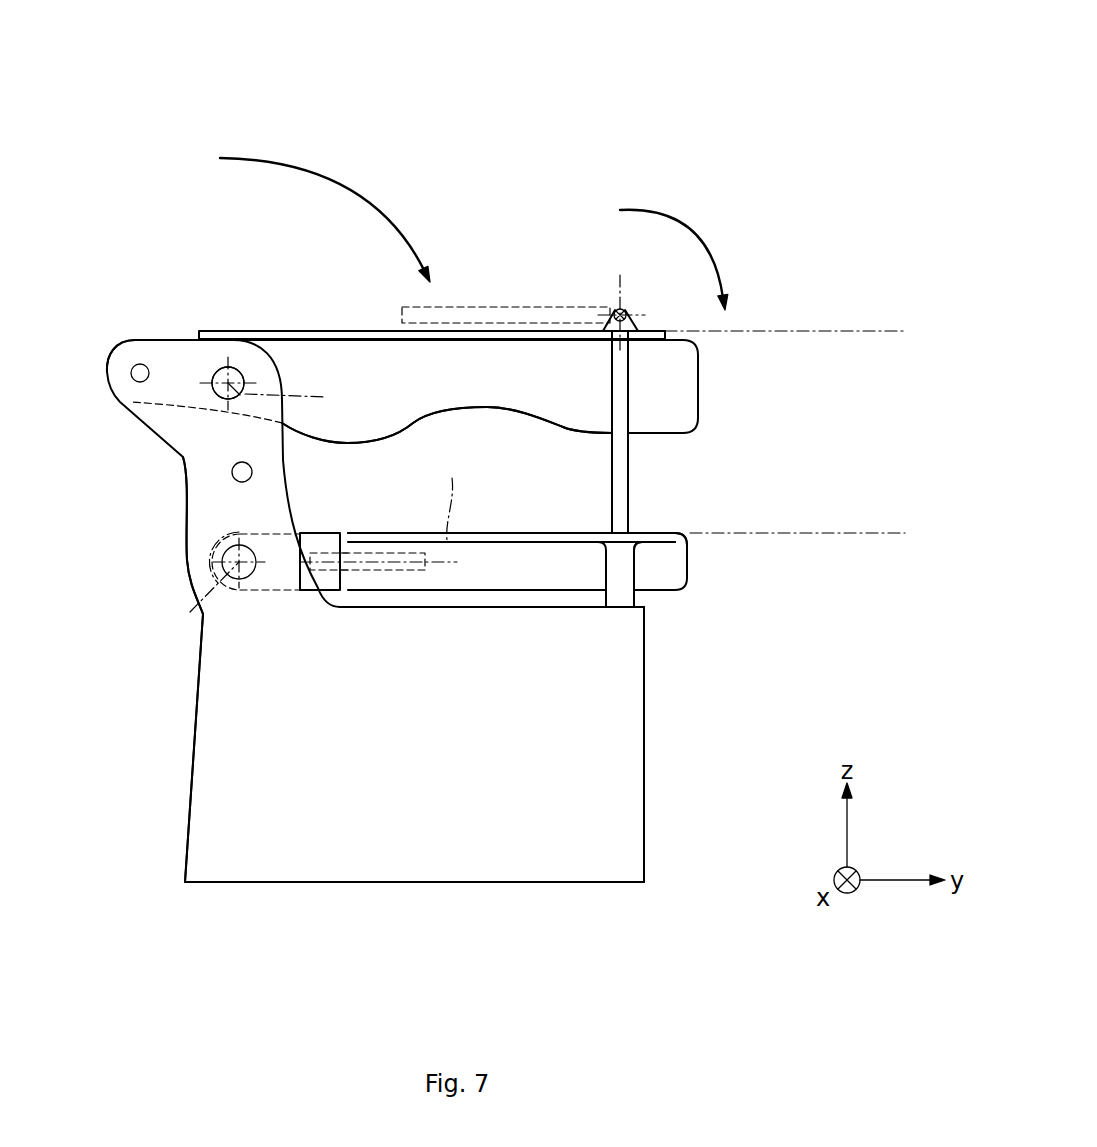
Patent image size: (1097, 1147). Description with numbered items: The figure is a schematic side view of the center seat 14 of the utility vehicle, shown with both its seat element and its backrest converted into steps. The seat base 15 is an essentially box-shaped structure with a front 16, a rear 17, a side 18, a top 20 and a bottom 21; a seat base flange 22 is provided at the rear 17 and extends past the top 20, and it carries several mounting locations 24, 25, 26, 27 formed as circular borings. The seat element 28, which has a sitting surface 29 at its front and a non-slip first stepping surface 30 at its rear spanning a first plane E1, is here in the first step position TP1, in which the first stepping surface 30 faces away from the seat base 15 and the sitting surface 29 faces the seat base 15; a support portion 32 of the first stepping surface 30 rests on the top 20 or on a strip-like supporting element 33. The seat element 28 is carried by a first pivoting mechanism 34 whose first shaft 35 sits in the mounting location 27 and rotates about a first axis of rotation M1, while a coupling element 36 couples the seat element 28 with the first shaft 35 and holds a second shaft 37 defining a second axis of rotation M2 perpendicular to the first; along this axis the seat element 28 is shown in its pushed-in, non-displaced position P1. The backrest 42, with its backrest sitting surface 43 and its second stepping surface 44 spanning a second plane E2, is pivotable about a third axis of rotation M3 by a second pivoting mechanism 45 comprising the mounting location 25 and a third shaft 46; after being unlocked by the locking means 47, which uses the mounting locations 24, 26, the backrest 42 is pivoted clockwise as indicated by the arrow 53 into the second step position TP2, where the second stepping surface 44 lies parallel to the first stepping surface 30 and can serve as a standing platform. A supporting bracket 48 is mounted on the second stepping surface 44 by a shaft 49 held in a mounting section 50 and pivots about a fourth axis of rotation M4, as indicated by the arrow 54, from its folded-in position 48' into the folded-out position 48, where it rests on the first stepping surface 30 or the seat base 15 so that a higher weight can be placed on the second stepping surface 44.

The seat 14 is at (792, 152).
The seat base 15 is at (182, 759).
The front 16 is at (647, 742).
The rear 17 is at (197, 720).
The side 18 is at (397, 797).
The top 20 is at (517, 607).
The bottom 21 is at (417, 882).
The seat base flange 22 is at (130, 350).
The mounting location 24 is at (140, 383).
The mounting location 25 is at (220, 367).
The mounting location 26 is at (232, 472).
The mounting location 27 is at (246, 580).
The seat element 28 is at (480, 518).
The sitting surface 29 is at (567, 598).
The first stepping surface 30 is at (562, 532).
The support portion 32 is at (619, 580).
The supporting element 33 is at (638, 598).
The first pivoting mechanism 34 is at (152, 571).
The first shaft 35 is at (218, 550).
The coupling element 36 is at (318, 533).
The second shaft 37 is at (384, 553).
The backrest 42 is at (712, 370).
The backrest sitting surface 43 is at (642, 435).
The second stepping surface 44 is at (333, 330).
The second pivoting mechanism 45 is at (262, 272).
The third shaft 46 is at (240, 366).
The locking means 47 is at (143, 500).
The supporting bracket 48 is at (681, 436).
The supporting bracket 48' is at (506, 276).
The shaft 49 is at (623, 307).
The mounting section 50 is at (637, 326).
The arrow 53 is at (340, 178).
The arrow 54 is at (690, 228).
The first plane E1 is at (862, 540).
The second plane E2 is at (865, 328).
The first step position TP1 is at (716, 507).
The second step position TP2 is at (520, 276).
The first axis of rotation M1 is at (190, 597).
The second axis of rotation M2 is at (384, 507).
The third axis of rotation M3 is at (303, 401).
The fourth axis of rotation M4 is at (610, 305).
The non-displaced position P1 is at (348, 630).